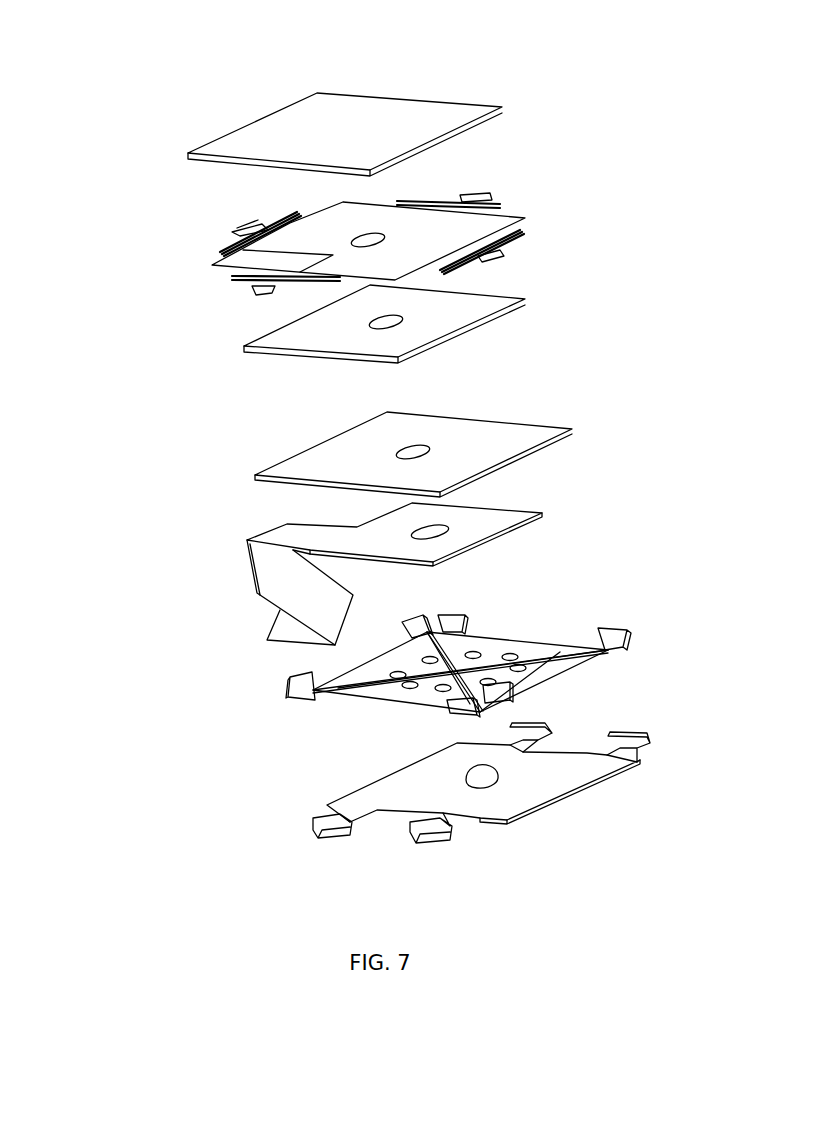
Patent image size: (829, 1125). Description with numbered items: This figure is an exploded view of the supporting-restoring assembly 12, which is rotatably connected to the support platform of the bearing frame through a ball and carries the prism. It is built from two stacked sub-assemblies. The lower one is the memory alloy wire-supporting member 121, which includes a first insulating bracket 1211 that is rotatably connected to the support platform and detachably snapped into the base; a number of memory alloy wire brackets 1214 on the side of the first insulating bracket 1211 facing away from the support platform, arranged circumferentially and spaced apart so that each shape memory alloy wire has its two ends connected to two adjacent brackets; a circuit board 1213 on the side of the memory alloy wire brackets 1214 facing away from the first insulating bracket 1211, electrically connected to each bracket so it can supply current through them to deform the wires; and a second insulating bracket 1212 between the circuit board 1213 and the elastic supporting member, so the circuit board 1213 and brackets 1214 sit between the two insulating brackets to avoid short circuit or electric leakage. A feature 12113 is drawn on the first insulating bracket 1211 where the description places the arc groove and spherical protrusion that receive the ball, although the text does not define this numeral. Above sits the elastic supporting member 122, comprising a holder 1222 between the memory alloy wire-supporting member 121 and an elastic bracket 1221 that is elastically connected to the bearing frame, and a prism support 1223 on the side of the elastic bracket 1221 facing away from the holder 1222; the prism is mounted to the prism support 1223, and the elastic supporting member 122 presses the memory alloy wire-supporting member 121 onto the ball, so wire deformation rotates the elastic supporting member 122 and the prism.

The supporting-restoring assembly 12 is at (322, 46).
The elastic supporting member 122 is at (102, 351).
The prism support 1223 is at (330, 142).
The elastic bracket 1221 is at (292, 255).
The holder 1222 is at (342, 330).
The memory alloy wire-supporting member 121 is at (125, 437).
The second insulating bracket 1212 is at (362, 457).
The circuit board 1213 is at (367, 543).
The memory alloy wire brackets 1214 is at (382, 695).
The first insulating bracket 1211 is at (390, 798).
The positioning protrusion 12113 is at (493, 777).